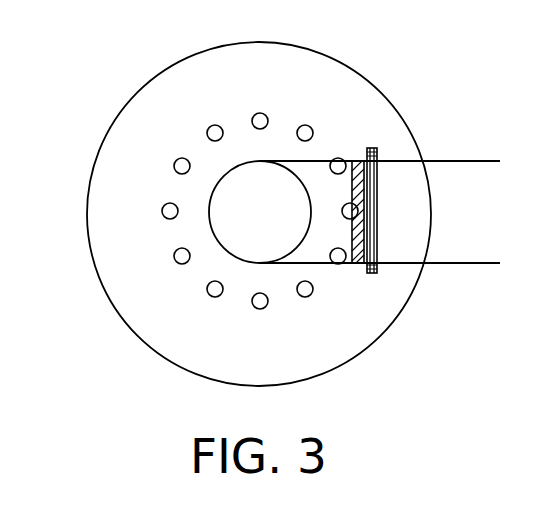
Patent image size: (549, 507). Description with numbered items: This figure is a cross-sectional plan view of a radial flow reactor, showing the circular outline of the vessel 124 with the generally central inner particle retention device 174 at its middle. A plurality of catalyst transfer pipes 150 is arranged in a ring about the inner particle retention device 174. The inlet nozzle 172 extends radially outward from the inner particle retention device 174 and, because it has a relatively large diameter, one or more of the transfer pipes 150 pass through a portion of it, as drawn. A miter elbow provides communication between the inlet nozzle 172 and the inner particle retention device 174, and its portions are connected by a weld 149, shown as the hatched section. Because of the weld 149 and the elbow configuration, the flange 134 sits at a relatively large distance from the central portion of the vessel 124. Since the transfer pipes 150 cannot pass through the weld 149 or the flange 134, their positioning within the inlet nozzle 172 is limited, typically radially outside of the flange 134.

The vessel 124 is at (86, 213).
The flange 134 is at (368, 150).
The weld 149 is at (357, 192).
The transfer pipes 150 is at (208, 126).
The inlet nozzle 172 is at (452, 170).
The inner particle retention device 174 is at (209, 214).